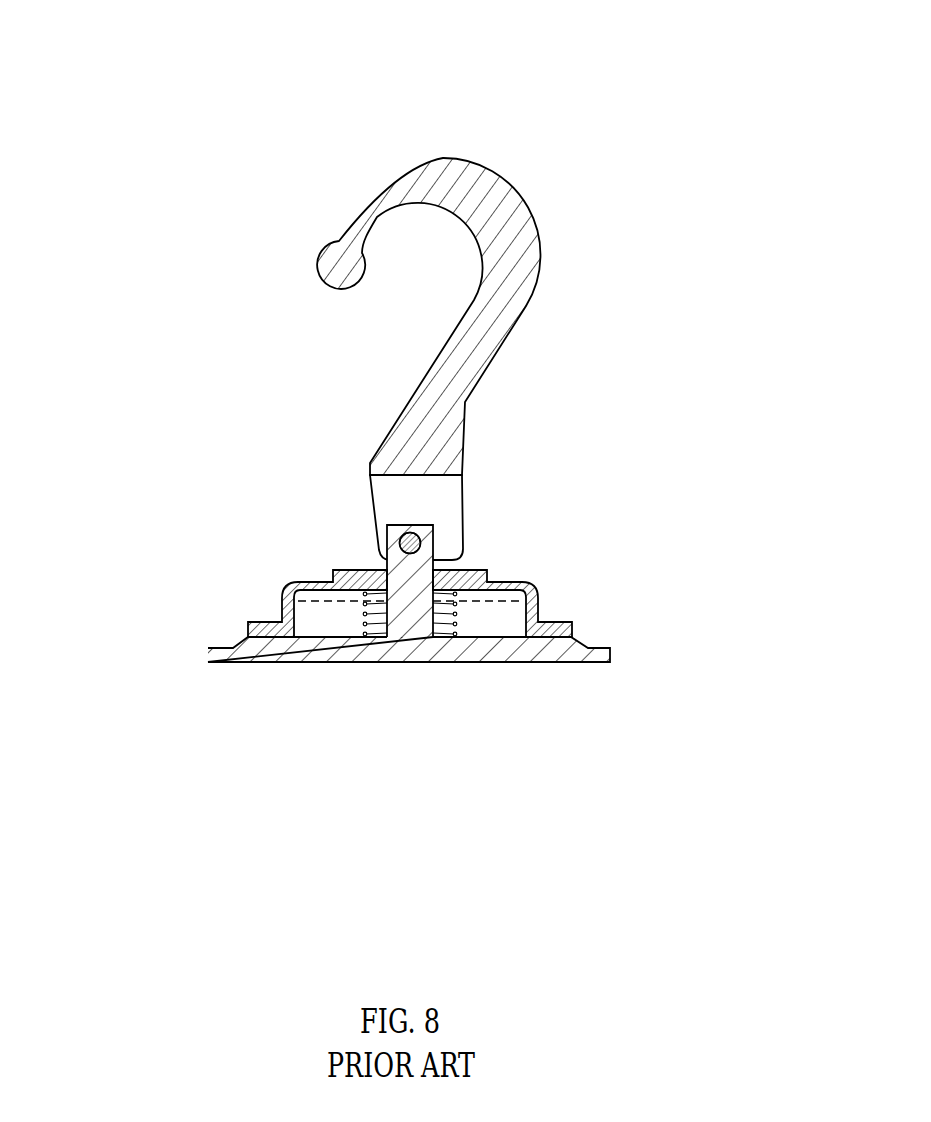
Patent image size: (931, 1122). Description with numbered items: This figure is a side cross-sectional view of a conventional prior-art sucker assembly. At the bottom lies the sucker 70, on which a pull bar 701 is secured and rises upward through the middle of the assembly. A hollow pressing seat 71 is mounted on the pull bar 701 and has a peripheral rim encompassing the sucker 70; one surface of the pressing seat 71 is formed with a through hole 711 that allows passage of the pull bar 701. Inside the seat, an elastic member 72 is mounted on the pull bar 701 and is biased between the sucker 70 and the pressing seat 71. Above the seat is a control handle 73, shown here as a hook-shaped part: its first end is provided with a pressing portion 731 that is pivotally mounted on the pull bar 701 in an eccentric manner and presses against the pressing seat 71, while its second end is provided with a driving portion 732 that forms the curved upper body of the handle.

The sucker 70 is at (510, 653).
The pull bar 701 is at (387, 570).
The hollow pressing seat 71 is at (373, 603).
The through hole 711 is at (540, 612).
The elastic member 72 is at (367, 613).
The control handle 73 is at (524, 283).
The pressing portion 731 is at (455, 537).
The driving portion 732 is at (485, 183).